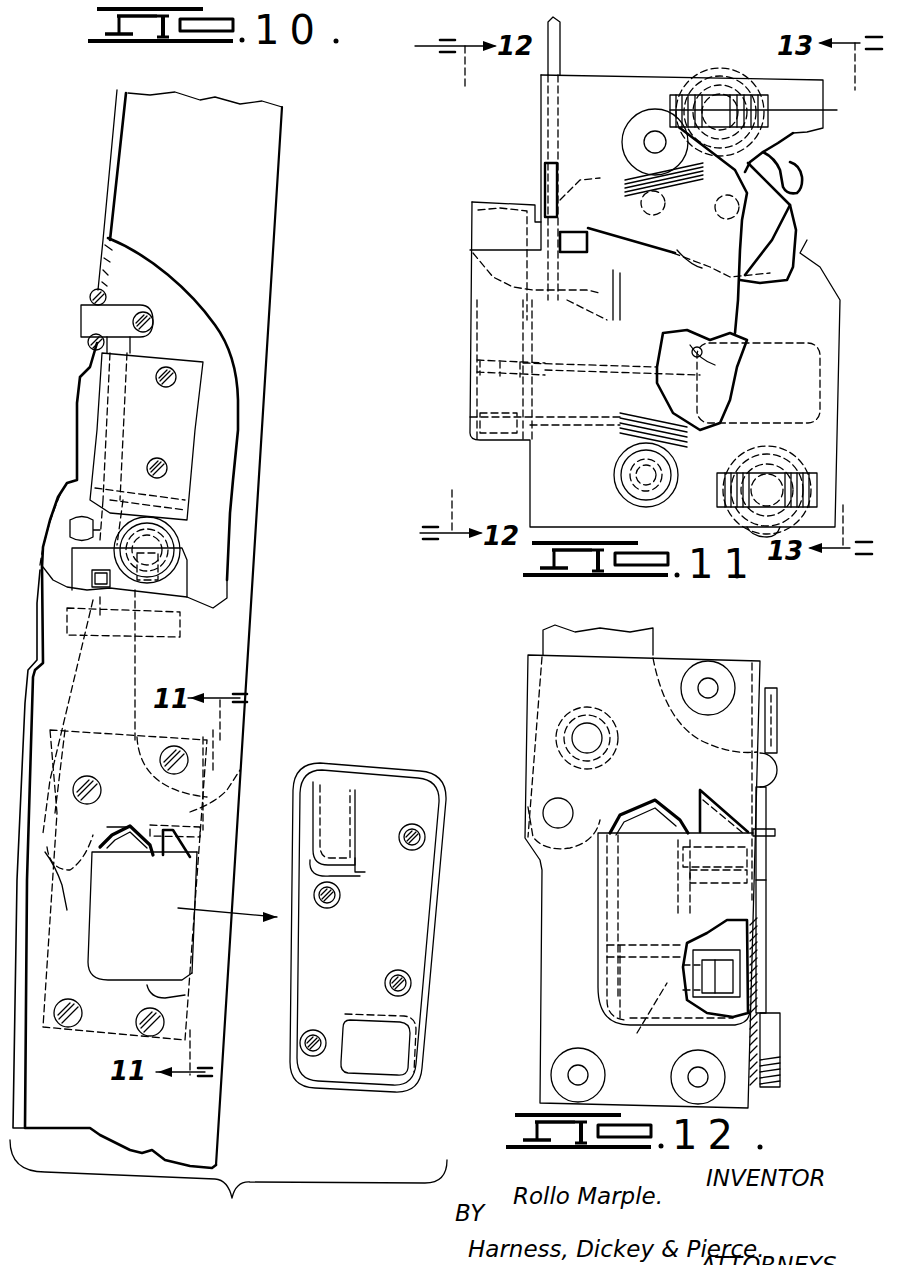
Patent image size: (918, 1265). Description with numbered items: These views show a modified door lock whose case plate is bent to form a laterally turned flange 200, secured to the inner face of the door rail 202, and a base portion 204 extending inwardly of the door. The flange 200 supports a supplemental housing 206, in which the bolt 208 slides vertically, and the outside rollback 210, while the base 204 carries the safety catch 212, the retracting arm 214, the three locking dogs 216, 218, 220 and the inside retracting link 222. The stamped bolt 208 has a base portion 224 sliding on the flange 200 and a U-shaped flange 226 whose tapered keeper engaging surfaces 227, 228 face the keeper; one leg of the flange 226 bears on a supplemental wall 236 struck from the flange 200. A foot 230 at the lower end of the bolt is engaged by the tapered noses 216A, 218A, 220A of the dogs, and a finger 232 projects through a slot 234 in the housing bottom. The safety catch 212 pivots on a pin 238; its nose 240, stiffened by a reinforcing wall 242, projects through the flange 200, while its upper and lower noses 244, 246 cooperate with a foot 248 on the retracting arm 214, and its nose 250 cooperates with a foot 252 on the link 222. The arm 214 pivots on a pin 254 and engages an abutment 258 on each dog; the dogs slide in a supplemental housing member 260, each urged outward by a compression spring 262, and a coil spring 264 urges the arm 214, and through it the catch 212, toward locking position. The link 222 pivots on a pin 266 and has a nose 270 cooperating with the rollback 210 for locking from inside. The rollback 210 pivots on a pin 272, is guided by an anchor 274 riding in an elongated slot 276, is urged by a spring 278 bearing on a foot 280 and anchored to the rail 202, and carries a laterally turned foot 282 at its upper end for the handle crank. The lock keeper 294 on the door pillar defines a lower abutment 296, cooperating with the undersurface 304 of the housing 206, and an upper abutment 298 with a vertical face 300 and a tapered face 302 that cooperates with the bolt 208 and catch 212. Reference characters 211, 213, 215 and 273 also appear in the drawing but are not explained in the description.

In FIG. 10, the laterally turned flange 200 is at (70, 1028).
In FIG. 11, the laterally turned flange 200 is at (540, 122).
In FIG. 12, the laterally turned flange 200 is at (540, 930).
In FIG. 10, the rail of the door 202 is at (190, 1127).
In FIG. 11, the base portion 204 is at (615, 87).
In FIG. 10, the supplemental housing 206 is at (182, 893).
In FIG. 11, the supplemental housing 206 is at (470, 374).
In FIG. 12, the supplemental housing 206 is at (597, 935).
In FIG. 10, the bolt 208 is at (153, 800).
In FIG. 11, the bolt 208 is at (510, 170).
In FIG. 12, the bolt 208 is at (655, 800).
In FIG. 10, the outside retracting member or rollback 210 is at (140, 663).
In FIG. 11, the outside retracting member or rollback 210 is at (560, 56).
In FIG. 12, the outside retracting member or rollback 210 is at (543, 638).
In FIG. 10, the lug 211 is at (210, 780).
In FIG. 11, the lug 211 is at (603, 175).
In FIG. 12, the lug 211 is at (777, 760).
In FIG. 10, the safety catch 212 is at (195, 854).
In FIG. 11, the safety catch 212 is at (800, 265).
In FIG. 12, the safety catch 212 is at (737, 811).
In FIG. 11, the pin 213 is at (552, 167).
In FIG. 12, the pin 213 is at (770, 790).
In FIG. 11, the retracting arm 214 is at (712, 313).
In FIG. 10, the ear 215 is at (205, 797).
In FIG. 12, the locking dog 216 is at (713, 977).
In FIG. 11, the tapered nose 216A is at (478, 385).
In FIG. 12, the locking dog 218 is at (727, 985).
In FIG. 11, the tapered nose 218A is at (472, 405).
In FIG. 12, the locking dog 220 is at (735, 990).
In FIG. 11, the tapered nose 220A is at (472, 427).
In FIG. 11, the inside retracting link 222 is at (720, 442).
In FIG. 12, the inside retracting link 222 is at (782, 745).
In FIG. 10, the base portion 224 is at (108, 870).
In FIG. 11, the base portion 224 is at (565, 370).
In FIG. 12, the base portion 224 is at (597, 887).
In FIG. 10, the flange 226 is at (72, 872).
In FIG. 12, the flange 226 is at (597, 850).
In FIG. 10, the tapered keeper engaging surface 227 is at (107, 827).
In FIG. 12, the tapered keeper engaging surface 227 is at (625, 808).
In FIG. 12, the tapered keeper engaging surface 228 is at (665, 810).
In FIG. 11, the foot 230 is at (482, 362).
In FIG. 12, the foot 230 is at (745, 942).
In FIG. 11, the finger 232 is at (468, 440).
In FIG. 12, the finger 232 is at (663, 983).
In FIG. 12, the slot 234 is at (640, 1020).
In FIG. 12, the supplemental wall 236 is at (768, 874).
In FIG. 11, the pin 238 is at (630, 220).
In FIG. 10, the nose 240 is at (190, 838).
In FIG. 11, the nose 240 is at (478, 229).
In FIG. 11, the reinforcing wall 242 is at (622, 254).
In FIG. 11, the upper nose 244 is at (803, 178).
In FIG. 11, the lower nose 246 is at (777, 247).
In FIG. 11, the foot 248 is at (790, 228).
In FIG. 11, the nose 250 is at (710, 375).
In FIG. 11, the foot 252 is at (695, 350).
In FIG. 11, the pin 254 is at (780, 205).
In FIG. 11, the abutment 258 is at (702, 380).
In FIG. 11, the supplemental housing member 260 is at (818, 396).
In FIG. 12, the supplemental housing member 260 is at (780, 1030).
In FIG. 11, the compression spring 262 is at (760, 535).
In FIG. 11, the coil spring 264 is at (707, 70).
In FIG. 11, the pin 266 is at (660, 490).
In FIG. 11, the nose 270 is at (558, 182).
In FIG. 12, the pin 272 is at (548, 811).
In FIG. 11, the roller 273 is at (647, 122).
In FIG. 12, the anchor 274 is at (575, 738).
In FIG. 12, the elongated slot 276 is at (619, 720).
In FIG. 10, the spring 278 is at (182, 553).
In FIG. 10, the foot 280 is at (182, 627).
In FIG. 10, the laterally turned foot 282 is at (68, 520).
In FIG. 10, the lock keeper 294 is at (387, 940).
In FIG. 10, the lower abutment 296 is at (372, 1030).
In FIG. 10, the upper abutment 298 is at (357, 866).
In FIG. 10, the vertical face 300 is at (363, 822).
In FIG. 10, the tapered face 302 is at (330, 882).
In FIG. 10, the undersurface 304 is at (160, 987).